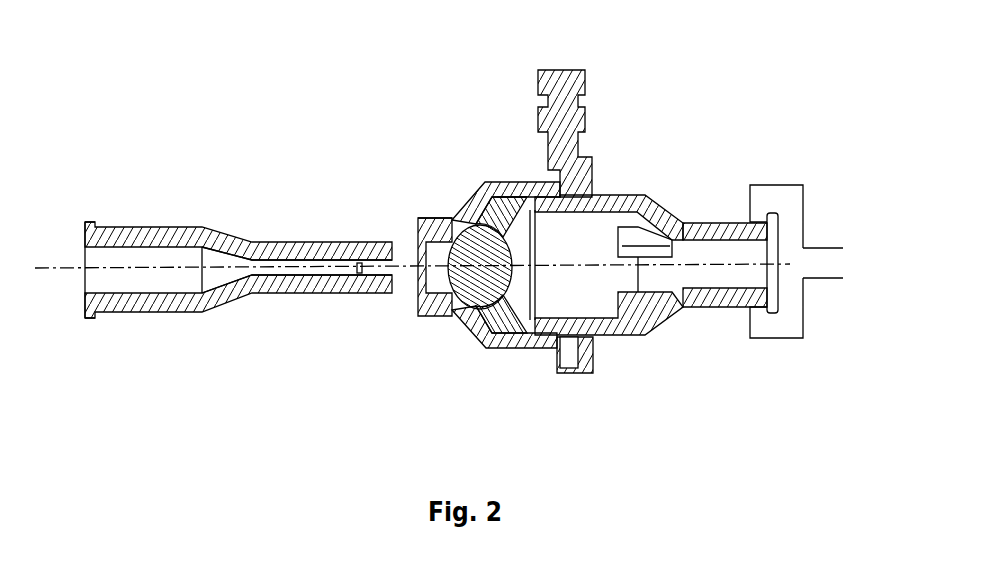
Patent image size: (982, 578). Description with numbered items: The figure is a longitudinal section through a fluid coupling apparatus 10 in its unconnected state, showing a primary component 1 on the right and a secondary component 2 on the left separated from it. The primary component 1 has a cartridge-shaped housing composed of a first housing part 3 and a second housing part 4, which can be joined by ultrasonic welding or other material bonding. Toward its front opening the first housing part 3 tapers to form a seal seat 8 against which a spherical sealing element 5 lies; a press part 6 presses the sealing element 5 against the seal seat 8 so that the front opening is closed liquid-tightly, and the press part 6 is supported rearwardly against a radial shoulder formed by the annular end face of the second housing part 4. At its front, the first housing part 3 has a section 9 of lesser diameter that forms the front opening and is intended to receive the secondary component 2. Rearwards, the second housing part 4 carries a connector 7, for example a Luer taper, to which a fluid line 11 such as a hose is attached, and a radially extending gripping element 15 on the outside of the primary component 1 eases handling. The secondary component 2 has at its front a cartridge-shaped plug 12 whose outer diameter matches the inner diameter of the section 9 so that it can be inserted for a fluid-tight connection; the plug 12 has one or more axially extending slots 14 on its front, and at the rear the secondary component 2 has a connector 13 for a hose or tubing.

The primary component 1 is at (617, 193).
The secondary component 2 is at (187, 312).
The first housing part 3 is at (526, 345).
The second housing part 4 is at (646, 323).
The spherical sealing element 5 is at (453, 233).
The press part 6 is at (506, 200).
The connector 7 is at (779, 314).
The seal seat 8 is at (465, 290).
The section of lesser diameter 9 is at (427, 220).
The fluid coupling apparatus 10 is at (358, 427).
The fluid line 11 is at (794, 312).
The cartridge-shaped plug 12 is at (287, 250).
The connector 13 is at (83, 308).
The axially extending slot 14 is at (373, 273).
The gripping element 15 is at (567, 70).